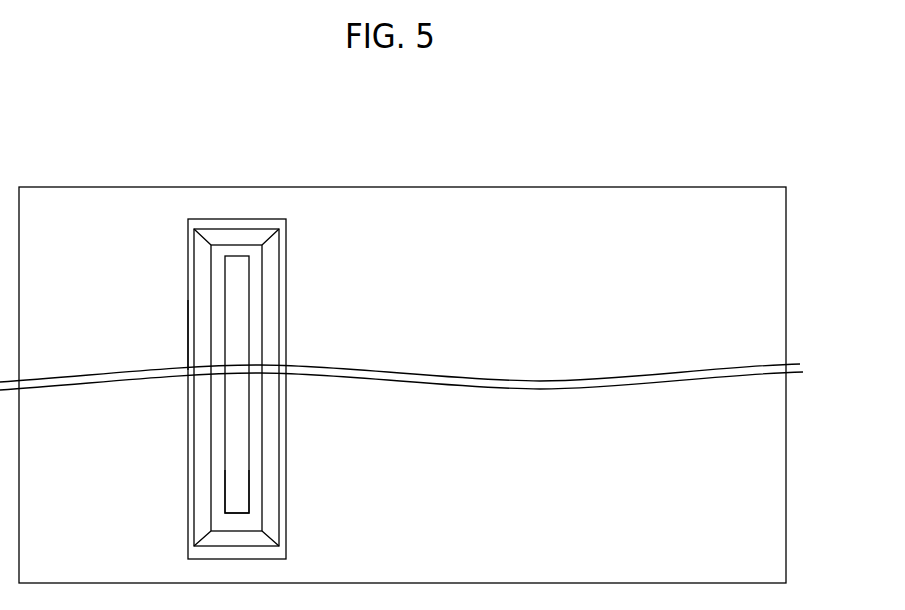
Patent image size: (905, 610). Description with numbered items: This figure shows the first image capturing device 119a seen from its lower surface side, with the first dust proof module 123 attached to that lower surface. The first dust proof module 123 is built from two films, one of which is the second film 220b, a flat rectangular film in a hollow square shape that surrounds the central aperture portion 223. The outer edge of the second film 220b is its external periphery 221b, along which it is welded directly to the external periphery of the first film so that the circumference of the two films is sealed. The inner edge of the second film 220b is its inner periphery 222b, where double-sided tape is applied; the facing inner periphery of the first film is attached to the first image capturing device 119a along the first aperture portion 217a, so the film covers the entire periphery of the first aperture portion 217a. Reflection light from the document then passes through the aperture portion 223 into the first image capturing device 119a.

The first image capturing device 119a is at (500, 225).
The first dust proof module 123 is at (225, 225).
The second film 220b is at (200, 305).
The external periphery of the second film 221b is at (190, 335).
The inner periphery of the second film 222b is at (218, 435).
The first aperture portion 217a is at (238, 465).
The aperture portion 223 is at (237, 493).